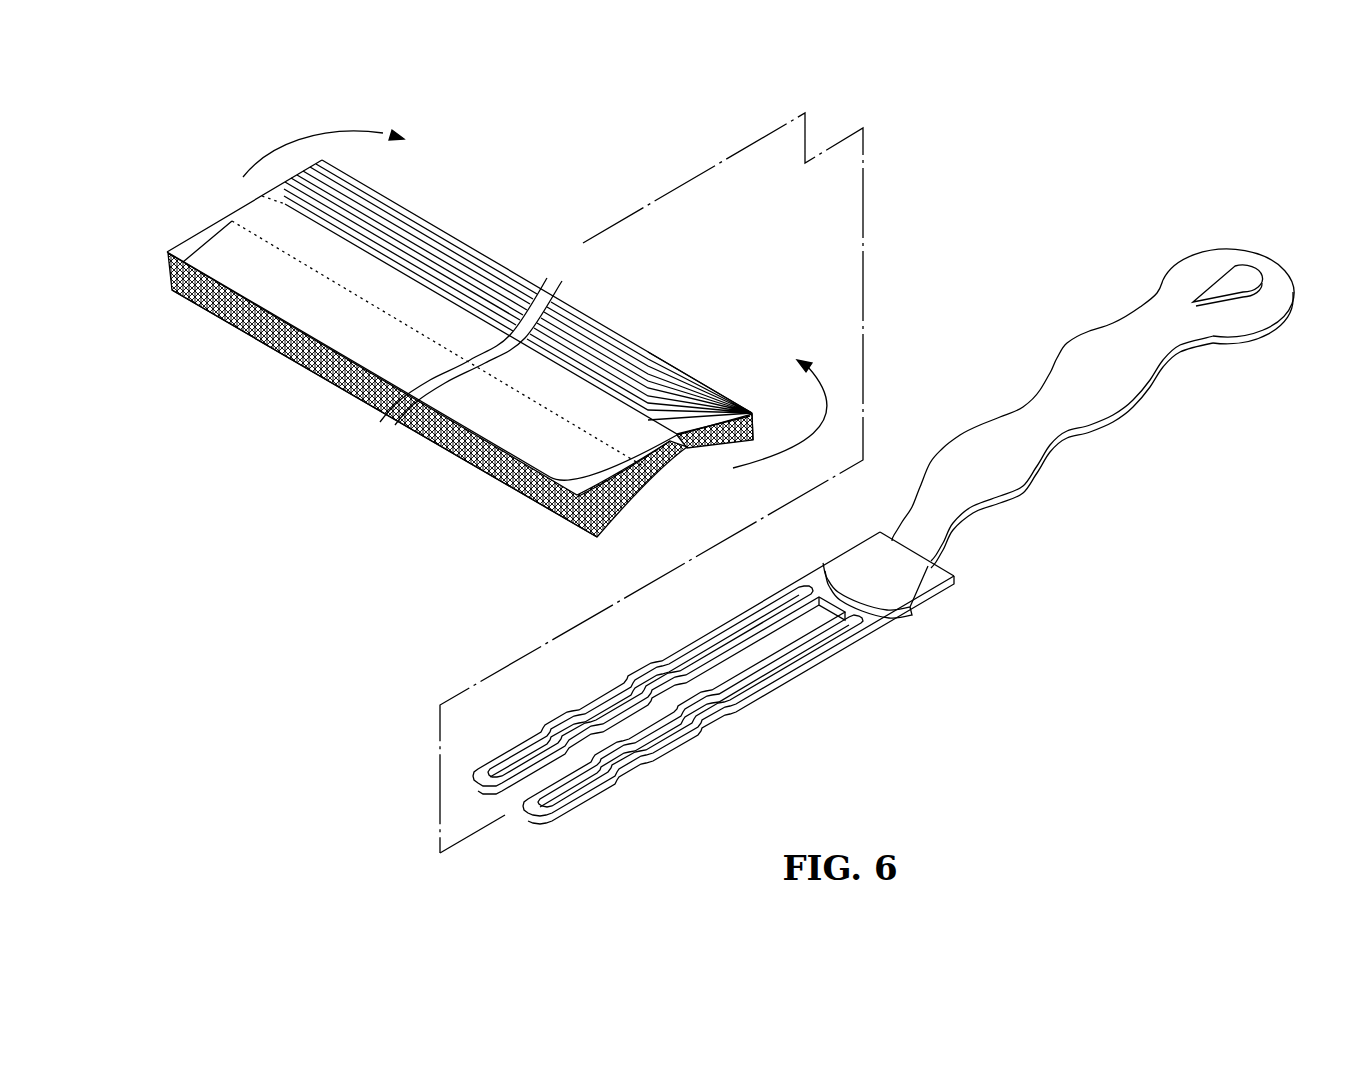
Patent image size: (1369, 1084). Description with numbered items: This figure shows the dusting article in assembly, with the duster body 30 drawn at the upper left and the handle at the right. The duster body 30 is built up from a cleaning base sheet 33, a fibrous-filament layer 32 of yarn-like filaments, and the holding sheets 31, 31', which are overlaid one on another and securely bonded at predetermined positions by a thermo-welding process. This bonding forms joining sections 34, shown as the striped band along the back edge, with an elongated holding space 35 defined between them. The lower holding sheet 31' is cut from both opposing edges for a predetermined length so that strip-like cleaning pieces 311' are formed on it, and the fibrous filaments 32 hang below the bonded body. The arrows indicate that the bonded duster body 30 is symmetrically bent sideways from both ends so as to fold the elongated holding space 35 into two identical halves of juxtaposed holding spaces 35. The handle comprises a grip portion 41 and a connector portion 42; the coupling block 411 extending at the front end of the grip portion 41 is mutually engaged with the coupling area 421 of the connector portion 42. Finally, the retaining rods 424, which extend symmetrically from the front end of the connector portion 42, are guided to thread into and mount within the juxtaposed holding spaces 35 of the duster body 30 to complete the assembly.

The duster body 30 is at (488, 525).
The holding sheet 31 is at (651, 476).
The lower holding sheet 31' is at (471, 287).
The strip-like cleaning pieces 311' is at (700, 340).
The fibrous-filament layer 32 is at (166, 268).
The cleaning base sheet 33 is at (463, 453).
The joining sections 34 is at (407, 208).
The elongated holding space 35 is at (412, 313).
The grip portion 41 is at (1160, 397).
The connector portion 42 is at (855, 660).
The retaining rods 424 is at (708, 638).
The coupling block 411 is at (903, 580).
The coupling area 421 is at (868, 594).